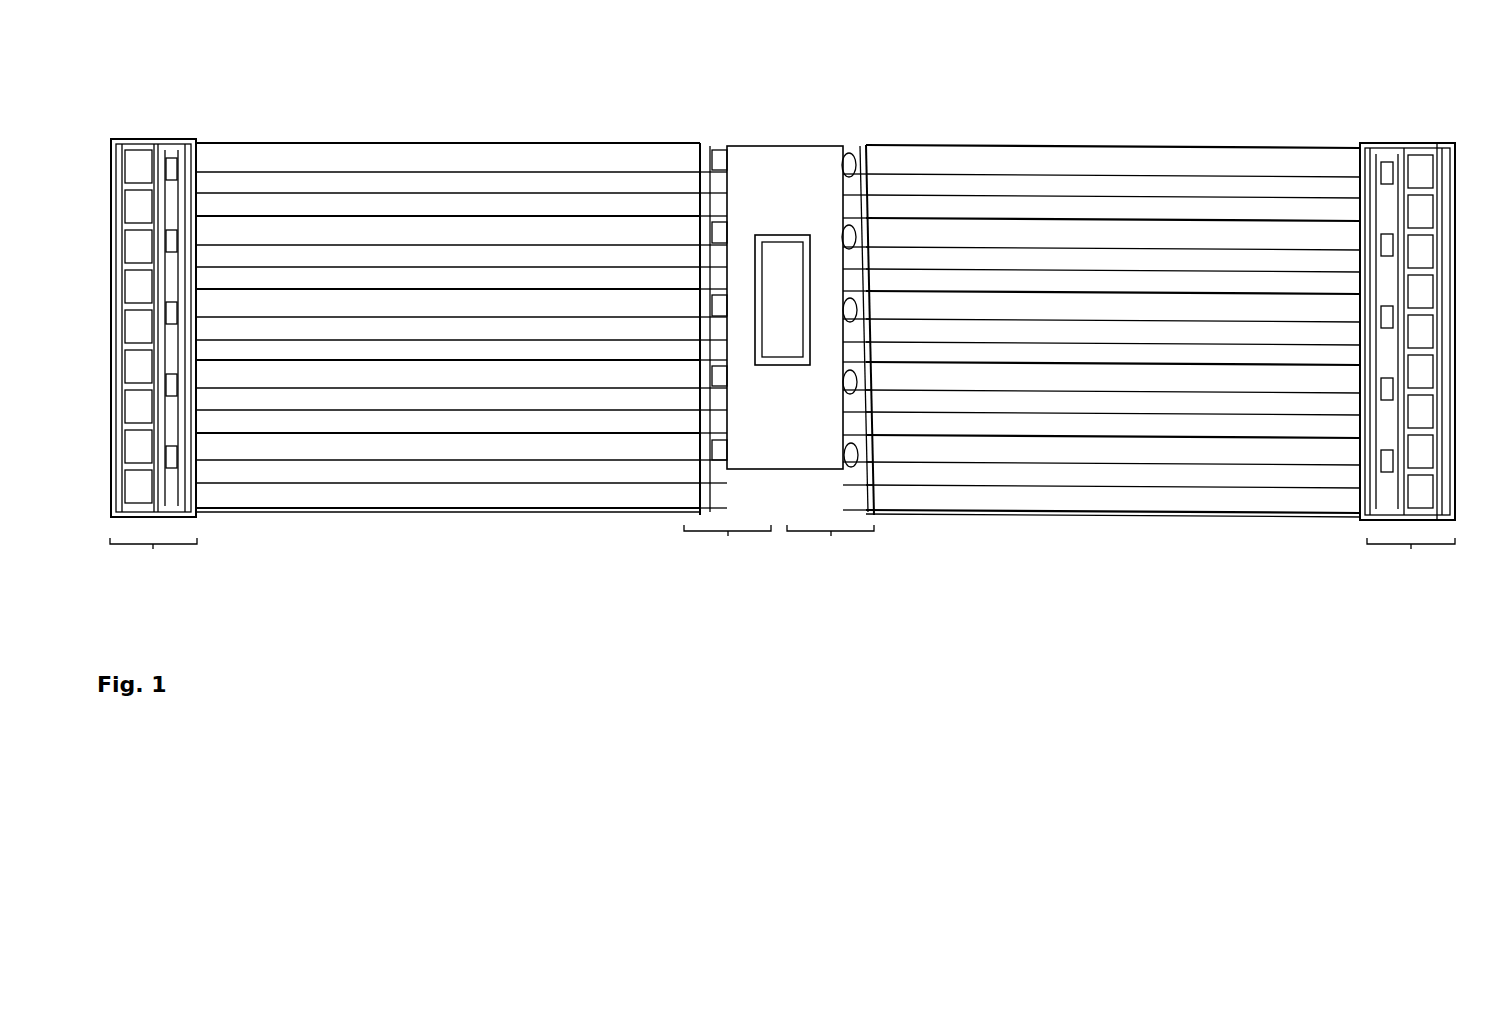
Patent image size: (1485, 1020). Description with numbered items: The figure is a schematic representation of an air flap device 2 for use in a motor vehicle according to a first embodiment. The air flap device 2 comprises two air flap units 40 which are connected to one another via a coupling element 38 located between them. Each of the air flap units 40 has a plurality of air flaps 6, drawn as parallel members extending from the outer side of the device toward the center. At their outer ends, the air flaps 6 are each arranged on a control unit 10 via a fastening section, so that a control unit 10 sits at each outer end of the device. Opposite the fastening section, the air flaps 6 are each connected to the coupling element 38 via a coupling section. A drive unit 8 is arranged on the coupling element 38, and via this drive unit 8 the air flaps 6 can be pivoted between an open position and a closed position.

The air flap device 2 is at (789, 339).
The air flap 6 is at (305, 142).
The drive unit 8 is at (780, 370).
The control unit 10 is at (170, 138).
The coupling element 38 is at (780, 146).
The air flap unit 40 is at (475, 115).